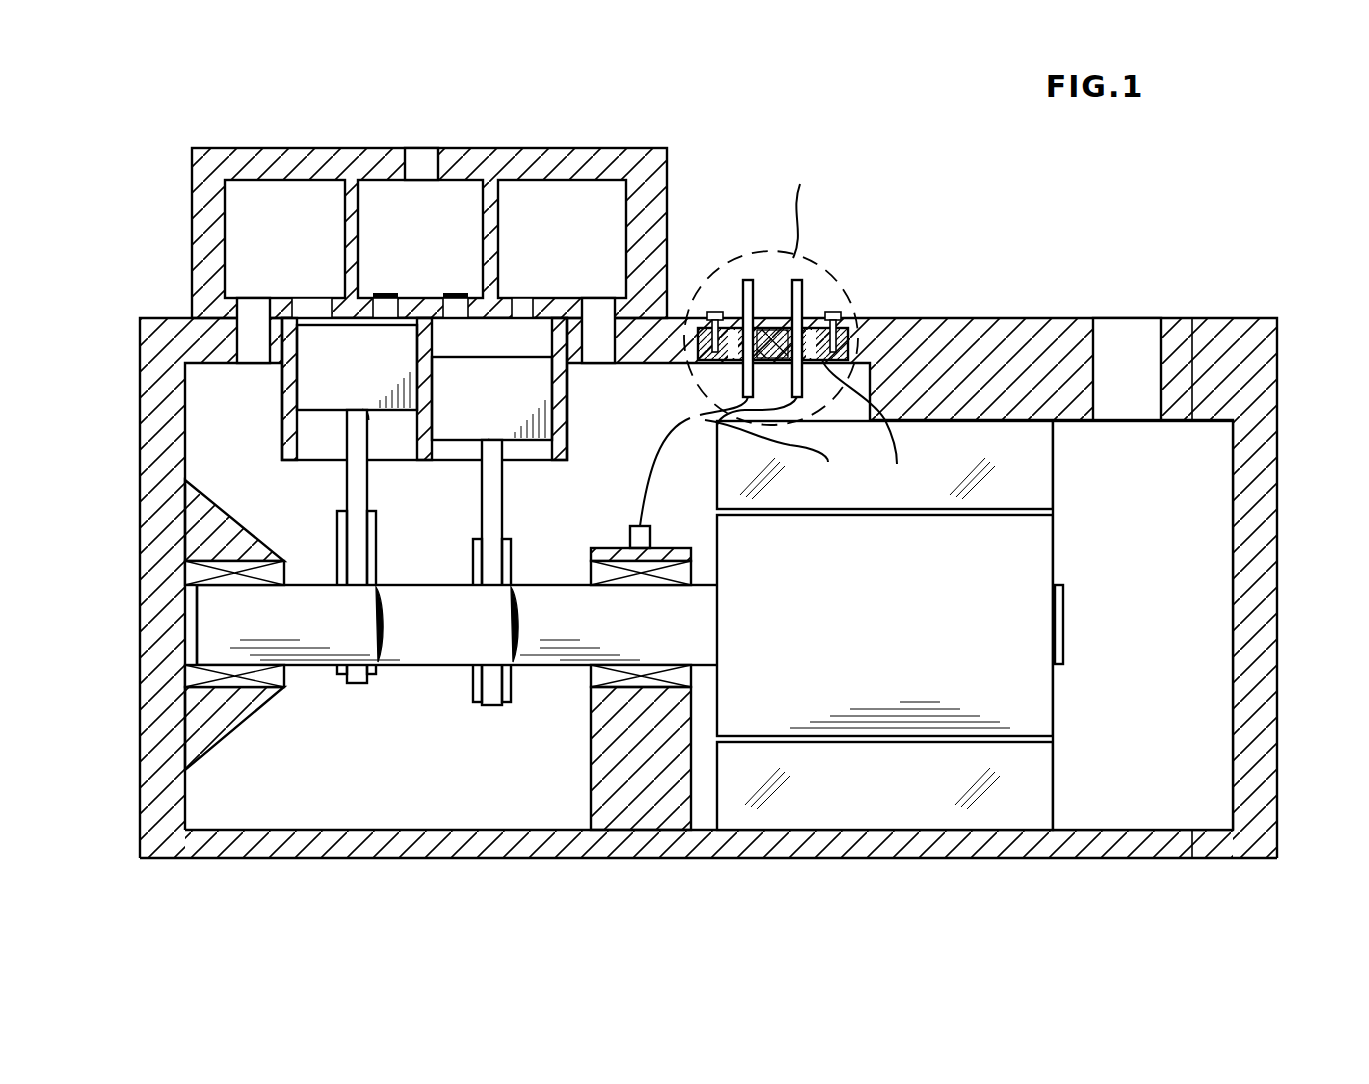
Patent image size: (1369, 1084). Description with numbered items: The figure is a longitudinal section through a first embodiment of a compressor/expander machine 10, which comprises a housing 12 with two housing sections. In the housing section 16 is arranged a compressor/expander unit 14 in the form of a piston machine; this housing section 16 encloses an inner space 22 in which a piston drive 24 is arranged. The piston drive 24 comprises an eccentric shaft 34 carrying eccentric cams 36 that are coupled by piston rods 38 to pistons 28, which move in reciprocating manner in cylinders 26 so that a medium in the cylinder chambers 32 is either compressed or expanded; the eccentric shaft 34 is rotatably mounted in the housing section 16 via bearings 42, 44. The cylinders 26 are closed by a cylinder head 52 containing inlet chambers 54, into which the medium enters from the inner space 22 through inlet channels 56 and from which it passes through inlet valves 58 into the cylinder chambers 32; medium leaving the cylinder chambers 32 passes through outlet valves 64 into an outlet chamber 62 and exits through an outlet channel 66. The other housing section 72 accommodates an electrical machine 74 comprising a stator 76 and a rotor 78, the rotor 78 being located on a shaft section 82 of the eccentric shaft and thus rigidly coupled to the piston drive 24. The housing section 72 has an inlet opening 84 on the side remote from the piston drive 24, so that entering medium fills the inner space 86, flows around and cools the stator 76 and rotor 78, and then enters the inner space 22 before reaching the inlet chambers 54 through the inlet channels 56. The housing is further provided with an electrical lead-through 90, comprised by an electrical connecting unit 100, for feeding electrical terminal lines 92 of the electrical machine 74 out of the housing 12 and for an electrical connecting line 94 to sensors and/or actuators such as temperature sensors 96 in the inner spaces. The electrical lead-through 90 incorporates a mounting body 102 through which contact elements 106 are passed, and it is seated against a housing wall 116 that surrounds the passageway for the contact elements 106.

The compressor/expander machine 10 is at (762, 222).
The housing 12 is at (1020, 306).
The compressor/expander unit 14 is at (415, 670).
The housing section 16 is at (287, 852).
The inner space 22 is at (287, 756).
The piston drive 24 is at (430, 678).
The cylinders 26 is at (320, 392).
The pistons 28 is at (335, 382).
The cylinder chambers 32 is at (347, 323).
The eccentric shaft 34 is at (562, 635).
The eccentric cams 36 is at (342, 529).
The piston rods 38 is at (357, 491).
The bearing 42 is at (207, 674).
The bearing 44 is at (690, 672).
The cylinder head 52 is at (391, 180).
The inlet chambers 54 is at (250, 197).
The inlet channels 56 is at (253, 350).
The inlet valves 58 is at (317, 310).
The outlet chamber 62 is at (372, 203).
The outlet valves 64 is at (385, 293).
The outlet channel 66 is at (425, 165).
The housing section 72 is at (993, 858).
The electrical machine 74 is at (1062, 538).
The stator 76 is at (820, 802).
The rotor 78 is at (869, 626).
The shaft section 82 is at (1063, 640).
The inlet opening 84 is at (1095, 352).
The inner space 86 is at (1175, 758).
The electrical lead-through 90 is at (847, 282).
The electrical terminal lines 92 is at (776, 459).
The electrical connecting line 94 is at (655, 441).
The temperature sensors 96 is at (636, 527).
The electrical connecting unit 100 is at (731, 250).
The mounting body 102 is at (874, 429).
The contact elements 106 is at (792, 283).
The housing wall 116 is at (855, 341).